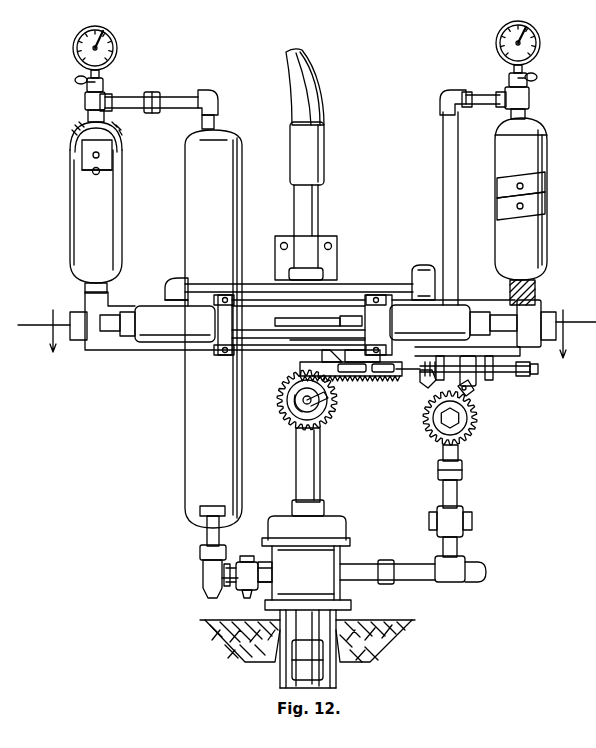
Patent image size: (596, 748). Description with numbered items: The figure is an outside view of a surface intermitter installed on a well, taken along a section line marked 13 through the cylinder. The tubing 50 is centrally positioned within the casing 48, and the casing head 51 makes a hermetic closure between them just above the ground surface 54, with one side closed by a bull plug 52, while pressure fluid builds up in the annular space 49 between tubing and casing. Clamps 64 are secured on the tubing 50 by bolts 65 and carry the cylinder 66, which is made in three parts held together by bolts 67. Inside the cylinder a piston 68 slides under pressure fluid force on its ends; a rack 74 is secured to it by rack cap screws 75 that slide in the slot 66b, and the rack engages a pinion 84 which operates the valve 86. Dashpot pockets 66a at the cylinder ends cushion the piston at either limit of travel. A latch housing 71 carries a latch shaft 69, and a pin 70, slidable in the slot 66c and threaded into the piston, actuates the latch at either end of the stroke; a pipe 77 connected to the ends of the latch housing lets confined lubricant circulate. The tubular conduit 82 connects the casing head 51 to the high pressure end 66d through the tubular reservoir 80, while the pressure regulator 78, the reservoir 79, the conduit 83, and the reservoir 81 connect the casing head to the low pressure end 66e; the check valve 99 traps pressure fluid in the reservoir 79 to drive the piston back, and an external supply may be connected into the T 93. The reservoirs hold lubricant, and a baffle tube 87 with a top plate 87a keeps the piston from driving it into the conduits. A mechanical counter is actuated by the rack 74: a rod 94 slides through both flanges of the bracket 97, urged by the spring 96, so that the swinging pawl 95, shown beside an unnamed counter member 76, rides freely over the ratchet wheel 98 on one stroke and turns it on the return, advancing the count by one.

The section line 13- 13 is at (307, 342).
The casing 48 is at (337, 680).
The annular space 49 is at (325, 650).
The tubing 50 is at (306, 92).
The casing head 51 is at (333, 528).
The bull plug 52 is at (595, 92).
The ground surface 54 is at (398, 620).
The clamps 64 is at (289, 266).
The bolts 65 is at (339, 244).
The cylinder 66 is at (125, 305).
The dashpot pockets 66a is at (78, 318).
The slot 66b is at (300, 332).
The slot 66c is at (327, 320).
The high pressure end 66d is at (556, 337).
The low pressure end 66e is at (93, 352).
The bolts 67 is at (404, 283).
The piston 68 is at (310, 340).
The latch shaft 69 is at (280, 322).
The pin 70 is at (392, 318).
The latch housing 71 is at (160, 323).
The rack 74 is at (366, 374).
The rack cap screws 75 is at (375, 372).
The bracket 76 is at (470, 372).
The pipe 77 is at (348, 285).
The pressure regulator 78 is at (215, 572).
The reservoir 79 is at (186, 432).
The tubular reservoir 80 is at (538, 157).
The reservoir 81 is at (105, 230).
The tubular conduit 82 is at (440, 97).
The conduit 83 is at (175, 96).
The pinion 84 is at (333, 413).
The valve 86 is at (296, 440).
The baffle tube 87 is at (106, 172).
The top plate 87a is at (118, 135).
The T 93 is at (467, 574).
The rod 94 is at (520, 372).
The swinging pawl 95 is at (470, 388).
The spring 96 is at (427, 398).
The bracket 97 is at (478, 358).
The ratchet wheel 98 is at (437, 452).
The check valve 99 is at (250, 592).